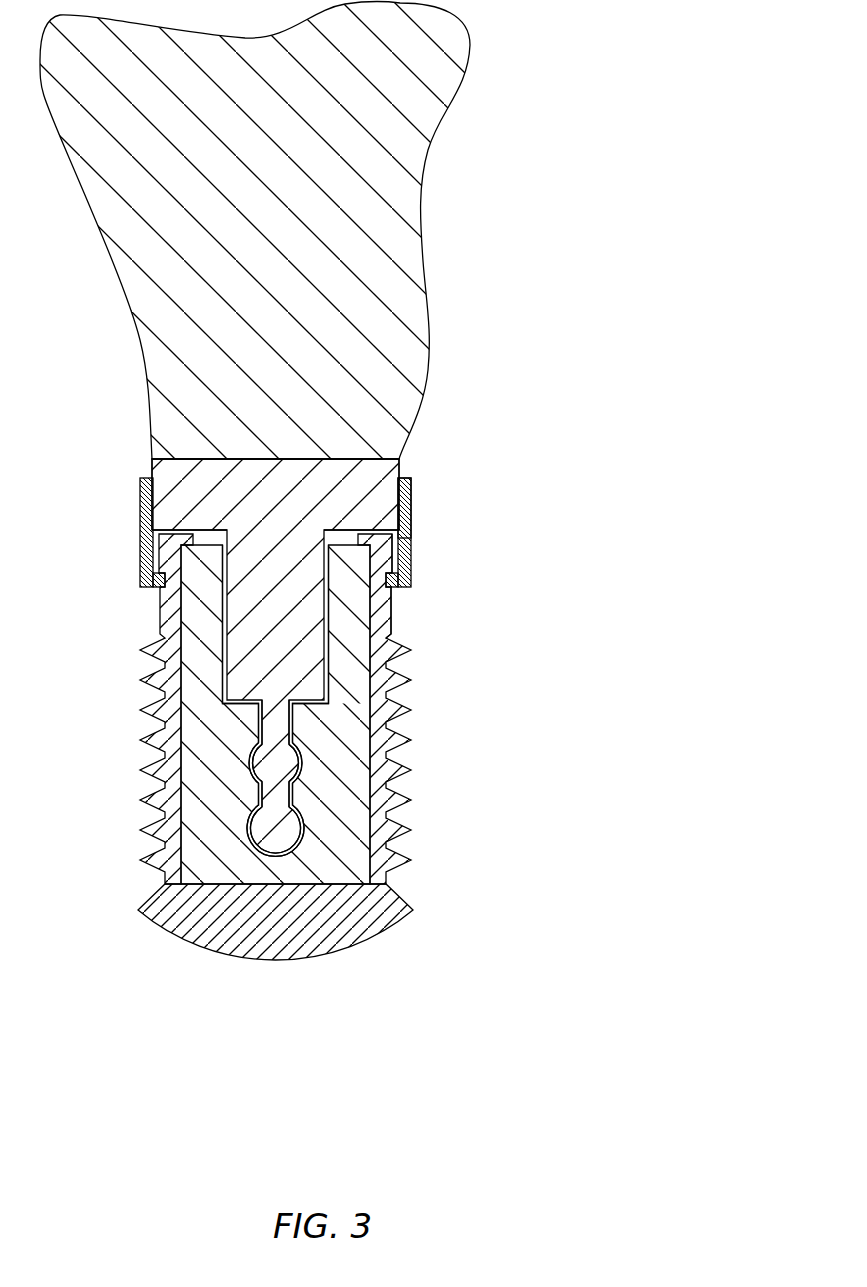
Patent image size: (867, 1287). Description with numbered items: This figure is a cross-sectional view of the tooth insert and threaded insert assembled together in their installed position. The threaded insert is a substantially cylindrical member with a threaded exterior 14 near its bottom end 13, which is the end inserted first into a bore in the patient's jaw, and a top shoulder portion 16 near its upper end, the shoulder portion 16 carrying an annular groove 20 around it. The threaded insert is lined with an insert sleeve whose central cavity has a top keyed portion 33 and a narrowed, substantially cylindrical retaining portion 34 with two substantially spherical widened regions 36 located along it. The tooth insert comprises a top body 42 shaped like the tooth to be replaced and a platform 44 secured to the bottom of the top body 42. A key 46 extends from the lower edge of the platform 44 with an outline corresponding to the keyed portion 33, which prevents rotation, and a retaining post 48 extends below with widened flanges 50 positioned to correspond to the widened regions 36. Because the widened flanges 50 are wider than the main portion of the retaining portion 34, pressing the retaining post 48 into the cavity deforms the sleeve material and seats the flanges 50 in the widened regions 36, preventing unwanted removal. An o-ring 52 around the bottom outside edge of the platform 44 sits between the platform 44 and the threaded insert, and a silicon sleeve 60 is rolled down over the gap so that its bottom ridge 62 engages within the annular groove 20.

The bottom end 13 is at (326, 953).
The threaded exterior 14 is at (143, 831).
The top shoulder portion 16 is at (160, 610).
The annular groove 20 is at (405, 569).
The top keyed portion 33 is at (218, 632).
The retaining portion 34 is at (258, 728).
The widened region 36 is at (250, 763).
The top body 42 is at (423, 240).
The platform 44 is at (399, 460).
The key 46 is at (313, 647).
The retaining post 48 is at (290, 730).
The widened flange 50 is at (290, 829).
The o-ring 52 is at (411, 517).
The silicon sleeve 60 is at (411, 490).
The bottom ridge 62 is at (390, 588).